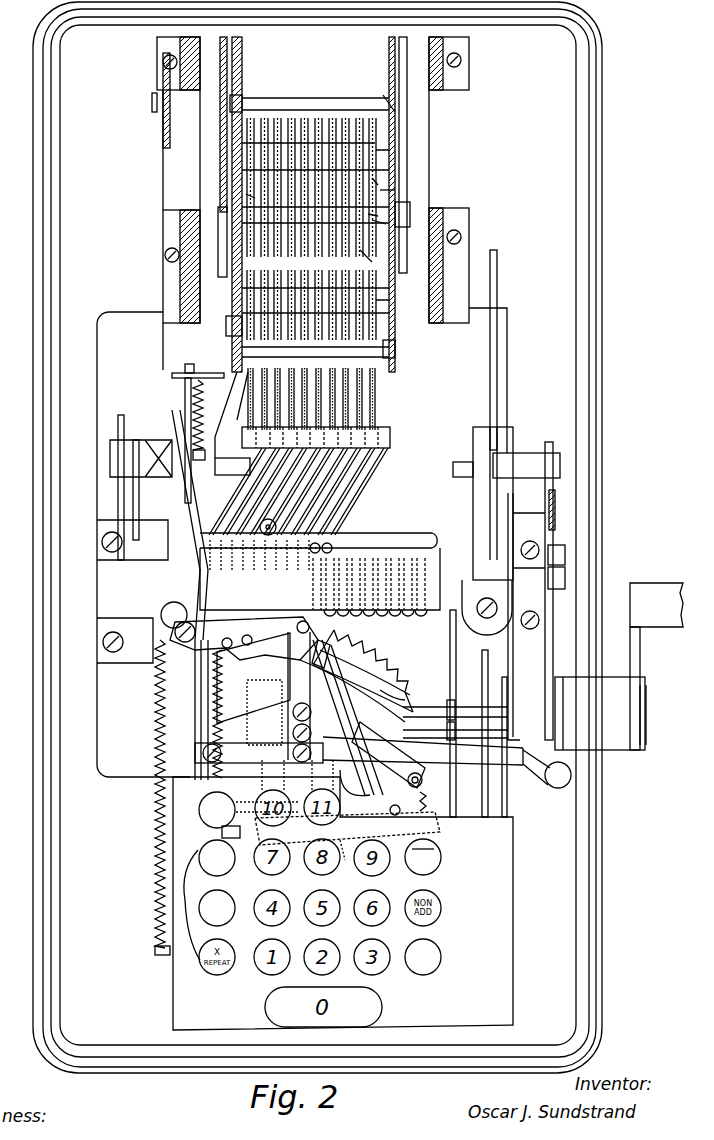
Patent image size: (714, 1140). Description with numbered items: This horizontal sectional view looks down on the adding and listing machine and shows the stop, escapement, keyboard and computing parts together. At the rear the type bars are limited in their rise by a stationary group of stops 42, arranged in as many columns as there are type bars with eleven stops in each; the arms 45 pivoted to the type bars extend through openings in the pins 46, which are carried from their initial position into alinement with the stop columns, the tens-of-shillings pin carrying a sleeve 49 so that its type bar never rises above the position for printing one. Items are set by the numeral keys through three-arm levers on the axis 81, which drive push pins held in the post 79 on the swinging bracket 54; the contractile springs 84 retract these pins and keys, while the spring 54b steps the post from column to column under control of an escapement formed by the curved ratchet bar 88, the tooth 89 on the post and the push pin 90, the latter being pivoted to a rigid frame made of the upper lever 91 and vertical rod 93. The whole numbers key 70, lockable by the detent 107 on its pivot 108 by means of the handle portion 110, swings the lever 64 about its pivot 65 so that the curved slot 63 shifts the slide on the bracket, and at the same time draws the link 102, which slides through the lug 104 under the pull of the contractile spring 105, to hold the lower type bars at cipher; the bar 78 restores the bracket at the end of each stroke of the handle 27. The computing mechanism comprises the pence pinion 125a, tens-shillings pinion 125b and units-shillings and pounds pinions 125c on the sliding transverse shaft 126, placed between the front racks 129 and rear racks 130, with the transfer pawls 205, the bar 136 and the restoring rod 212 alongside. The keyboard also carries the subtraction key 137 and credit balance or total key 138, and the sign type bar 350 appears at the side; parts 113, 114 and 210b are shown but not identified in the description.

The handle 27 is at (660, 590).
The stops 42 is at (398, 662).
The arms 45 is at (328, 470).
The pins 46 is at (265, 562).
The sleeve 49 is at (349, 587).
The bracket 54 is at (396, 772).
The spring 54b is at (430, 796).
The curved slot 63 is at (423, 750).
The lever 64 is at (236, 700).
The pivot 65 is at (556, 786).
The whole numbers key 70 is at (204, 798).
The bar 78 is at (188, 528).
The post 79 is at (298, 641).
The axis 81 is at (346, 862).
The contractile springs 84 is at (253, 689).
The curved ratchet bar 88 is at (363, 668).
The tooth 89 is at (304, 630).
The push pin 90 is at (356, 689).
The upper lever 91 is at (422, 818).
The vertical rod 93 is at (356, 727).
The link 102 is at (178, 692).
The lug 104 is at (177, 372).
The contractile spring 105 is at (188, 392).
The detent 107 is at (187, 854).
The pivot 108 is at (198, 906).
The handle portion 110 is at (222, 833).
The block 113 is at (236, 470).
The cross bar 114 is at (378, 446).
The pence pinion 125a is at (376, 214).
The tens-shillings pinion 125b is at (374, 182).
The units-shillings and pounds pinions 125c is at (248, 196).
The transverse shaft 126 is at (395, 190).
The front racks 129 is at (252, 300).
The rear racks 130 is at (284, 120).
The bar 136 is at (383, 155).
The subtraction key 137 is at (441, 858).
The credit balance or total key 138 is at (441, 950).
The pawls 205 is at (316, 118).
The stop 210b is at (374, 260).
The restoring rod 212 is at (358, 118).
The type bar 350 is at (372, 400).